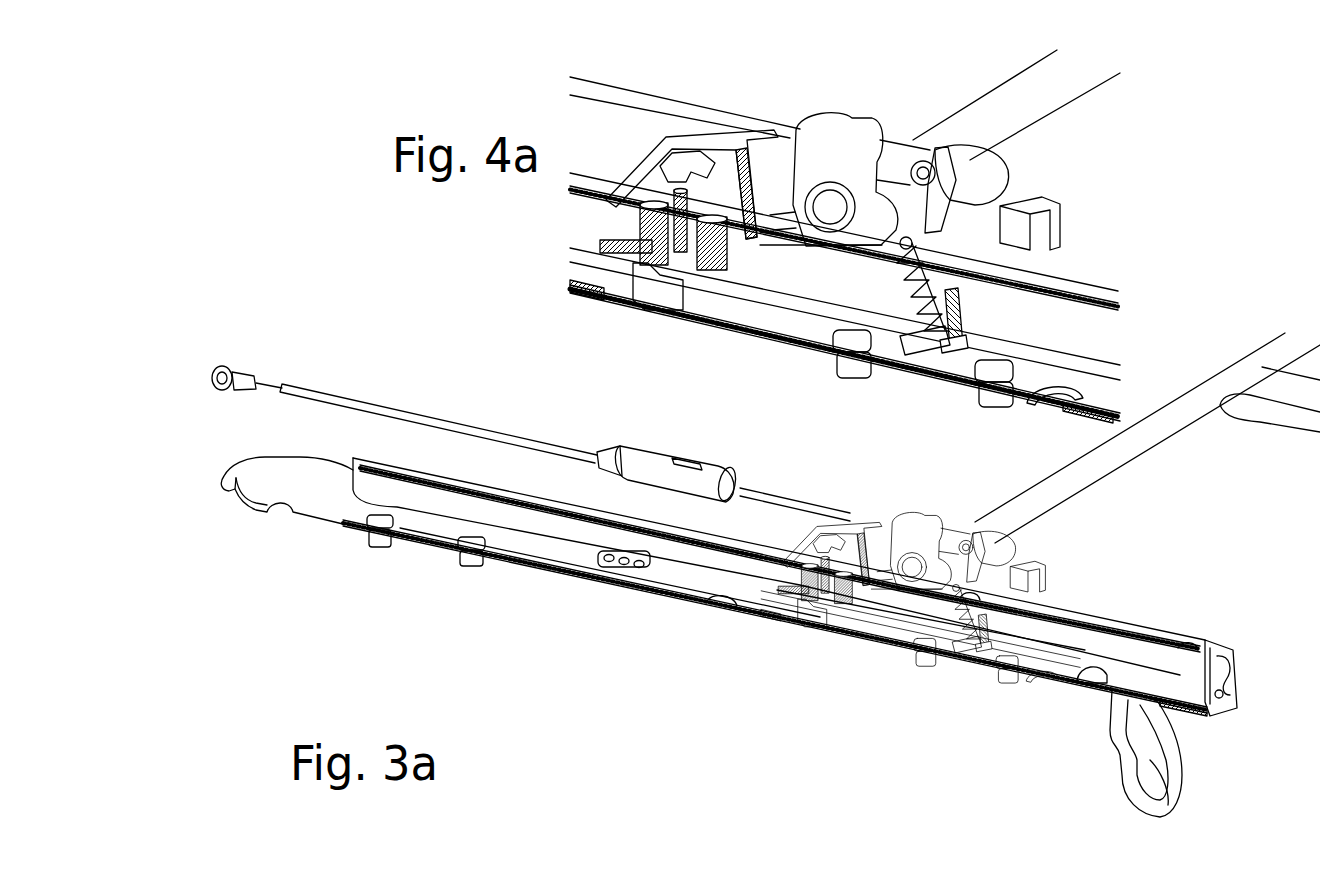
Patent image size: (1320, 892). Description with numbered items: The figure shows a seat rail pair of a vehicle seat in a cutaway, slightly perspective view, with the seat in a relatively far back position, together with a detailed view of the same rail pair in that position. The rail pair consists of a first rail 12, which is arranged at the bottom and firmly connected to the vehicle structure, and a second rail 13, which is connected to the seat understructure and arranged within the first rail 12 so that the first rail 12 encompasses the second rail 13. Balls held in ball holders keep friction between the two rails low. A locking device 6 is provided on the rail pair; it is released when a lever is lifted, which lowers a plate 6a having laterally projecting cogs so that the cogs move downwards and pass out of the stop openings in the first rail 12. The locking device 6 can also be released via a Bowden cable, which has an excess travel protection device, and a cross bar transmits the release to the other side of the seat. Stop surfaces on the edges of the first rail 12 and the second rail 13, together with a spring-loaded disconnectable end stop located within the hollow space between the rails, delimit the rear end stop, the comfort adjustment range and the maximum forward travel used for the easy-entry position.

In FIG. 4A, the locking device 6 is at (572, 230).
In FIG. 4A, the plate 6a is at (610, 253).
In FIG. 3A, the first rail 12 is at (537, 557).
In FIG. 3A, the second rail 13 is at (1087, 627).